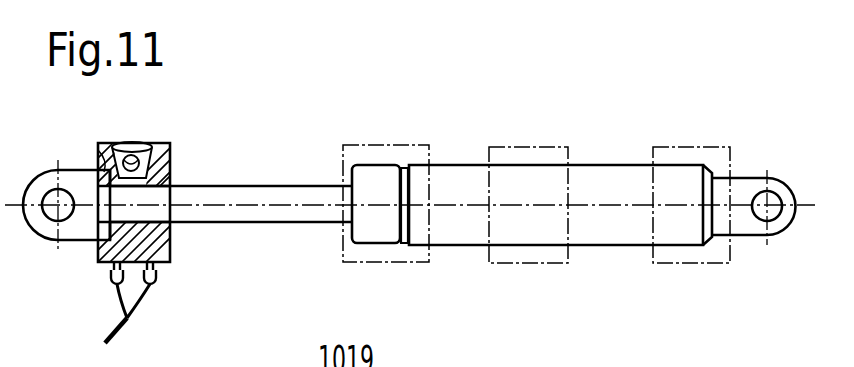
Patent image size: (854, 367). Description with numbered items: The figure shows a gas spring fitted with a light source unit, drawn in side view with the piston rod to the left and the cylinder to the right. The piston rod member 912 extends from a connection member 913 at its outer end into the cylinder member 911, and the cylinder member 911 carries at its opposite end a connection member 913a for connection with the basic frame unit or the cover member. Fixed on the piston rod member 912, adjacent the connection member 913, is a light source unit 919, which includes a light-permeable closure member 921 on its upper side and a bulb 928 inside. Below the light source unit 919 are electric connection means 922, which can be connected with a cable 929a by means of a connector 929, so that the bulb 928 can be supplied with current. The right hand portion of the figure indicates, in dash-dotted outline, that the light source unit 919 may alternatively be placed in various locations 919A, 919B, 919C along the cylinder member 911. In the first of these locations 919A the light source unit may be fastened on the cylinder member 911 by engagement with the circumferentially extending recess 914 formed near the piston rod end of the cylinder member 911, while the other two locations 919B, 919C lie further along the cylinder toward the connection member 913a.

The cylinder member 911 is at (582, 223).
The piston rod member 912 is at (290, 193).
The connection member 913 is at (72, 230).
The connection member 913a is at (747, 223).
The circumferentially extending recess 914 is at (410, 177).
The light source unit 919 is at (171, 145).
The light source unit location 919A is at (397, 134).
The light source unit location 919B is at (541, 134).
The light source unit location 919C is at (706, 134).
The light-permeable closure member 921 is at (126, 142).
The electric connection means 922 is at (123, 268).
The bulb 928 is at (97, 148).
The connector 929 is at (108, 282).
The cable 929a is at (124, 328).